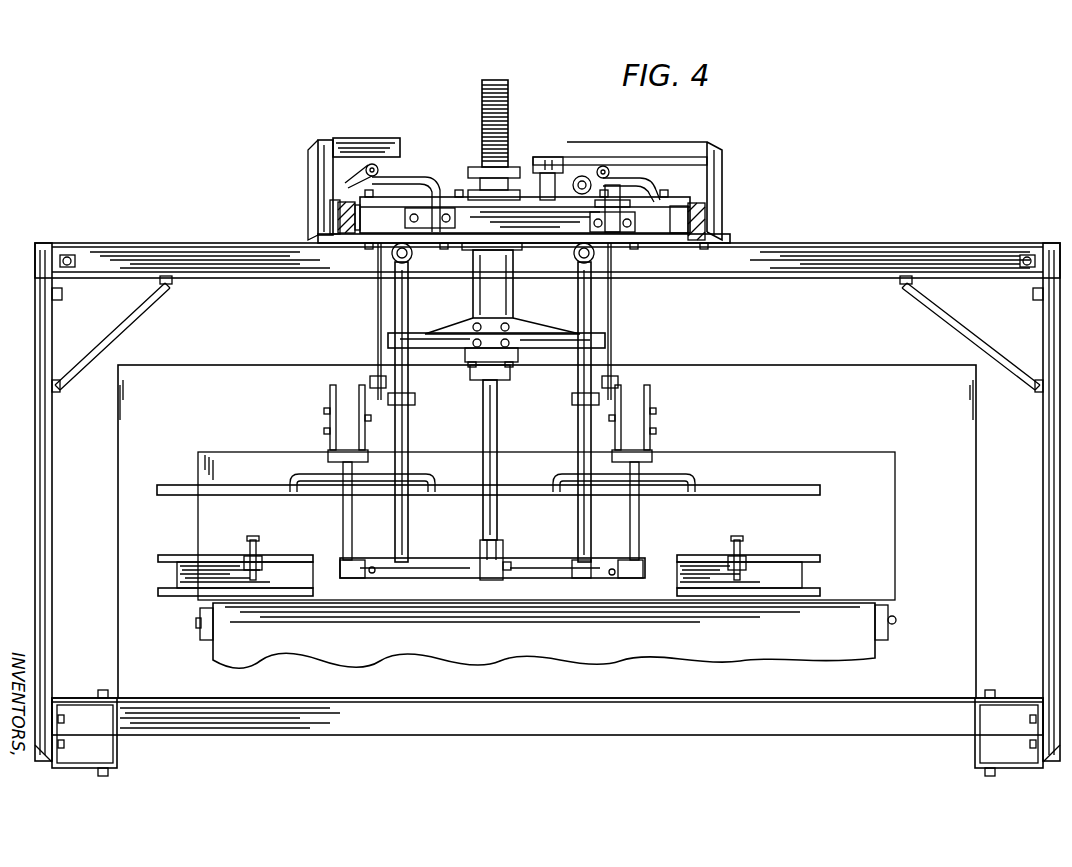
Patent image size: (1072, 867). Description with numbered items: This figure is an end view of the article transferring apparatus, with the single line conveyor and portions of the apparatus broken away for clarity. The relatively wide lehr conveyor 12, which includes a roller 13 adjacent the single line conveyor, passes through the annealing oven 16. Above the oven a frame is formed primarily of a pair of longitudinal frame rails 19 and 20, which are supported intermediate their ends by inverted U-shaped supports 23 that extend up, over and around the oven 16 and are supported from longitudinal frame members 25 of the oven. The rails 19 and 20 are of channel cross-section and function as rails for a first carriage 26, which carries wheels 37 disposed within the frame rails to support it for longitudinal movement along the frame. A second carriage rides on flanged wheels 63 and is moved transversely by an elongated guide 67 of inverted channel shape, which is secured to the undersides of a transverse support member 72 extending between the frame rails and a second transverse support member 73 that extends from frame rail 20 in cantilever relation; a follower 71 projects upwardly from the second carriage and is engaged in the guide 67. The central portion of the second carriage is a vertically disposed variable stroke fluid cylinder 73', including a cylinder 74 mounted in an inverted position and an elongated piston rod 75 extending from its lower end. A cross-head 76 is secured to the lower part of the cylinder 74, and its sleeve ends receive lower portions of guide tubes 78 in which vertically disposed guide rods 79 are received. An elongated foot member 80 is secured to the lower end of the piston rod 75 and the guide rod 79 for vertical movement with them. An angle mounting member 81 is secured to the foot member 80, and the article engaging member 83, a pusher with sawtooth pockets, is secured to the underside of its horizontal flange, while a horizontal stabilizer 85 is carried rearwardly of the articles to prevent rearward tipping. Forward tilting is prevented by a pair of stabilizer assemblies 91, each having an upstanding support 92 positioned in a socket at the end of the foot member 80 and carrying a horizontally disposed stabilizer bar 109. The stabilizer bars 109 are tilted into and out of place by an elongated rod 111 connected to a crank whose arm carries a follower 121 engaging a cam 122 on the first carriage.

The lehr conveyor 12 is at (300, 652).
The roller 13 is at (208, 642).
The oven 16 is at (742, 366).
The longitudinal frame rail 19 is at (335, 215).
The longitudinal frame rail 20 is at (706, 218).
The inverted U-shaped support 23 is at (858, 244).
The longitudinal frame member 25 is at (118, 747).
The first carriage 26 is at (542, 224).
The wheel 37 is at (348, 236).
The flanged wheel 63 is at (413, 253).
The elongated guide 67 is at (564, 150).
The follower 71 is at (543, 157).
The transverse support member 72 is at (353, 140).
The second transverse support member 73 is at (532, 182).
The fluid cylinder 73' is at (502, 318).
The cylinder 74 is at (478, 300).
The piston rod 75 is at (498, 428).
The cross-head 76 is at (464, 347).
The guide tube 78 is at (394, 291).
The guide rod 79 is at (588, 552).
The foot member 80 is at (525, 558).
The angle mounting member 81 is at (190, 567).
The article engaging member 83 is at (165, 598).
The stabilizer 85 is at (302, 556).
The stabilizer assembly 91 is at (307, 462).
The upstanding support 92 is at (640, 542).
The stabilizer bar 109 is at (253, 490).
The elongated rod 111 is at (378, 326).
The follower 121 is at (378, 165).
The cam 122 is at (427, 186).